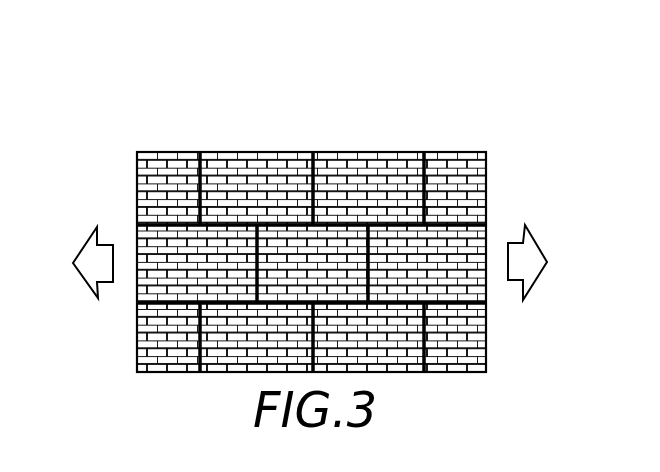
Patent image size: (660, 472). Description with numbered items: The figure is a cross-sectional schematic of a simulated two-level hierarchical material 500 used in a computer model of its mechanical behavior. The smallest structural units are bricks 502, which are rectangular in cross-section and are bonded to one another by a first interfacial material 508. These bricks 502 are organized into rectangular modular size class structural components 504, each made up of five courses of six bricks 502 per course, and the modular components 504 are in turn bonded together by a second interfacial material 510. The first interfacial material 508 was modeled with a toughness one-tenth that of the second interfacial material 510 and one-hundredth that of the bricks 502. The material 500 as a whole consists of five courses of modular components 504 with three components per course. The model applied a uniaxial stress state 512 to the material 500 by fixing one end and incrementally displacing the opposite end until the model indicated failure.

The material 500 is at (327, 77).
The bricks 502 is at (487, 167).
The modular size class structural components 504 is at (315, 151).
The first interfacial material 508 is at (410, 160).
The second interfacial material 510 is at (424, 163).
The uniaxial stress state 512 is at (546, 250).